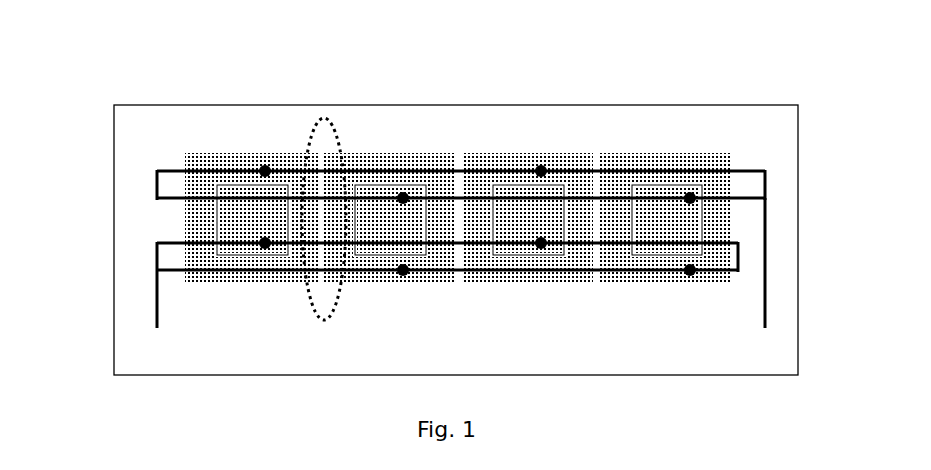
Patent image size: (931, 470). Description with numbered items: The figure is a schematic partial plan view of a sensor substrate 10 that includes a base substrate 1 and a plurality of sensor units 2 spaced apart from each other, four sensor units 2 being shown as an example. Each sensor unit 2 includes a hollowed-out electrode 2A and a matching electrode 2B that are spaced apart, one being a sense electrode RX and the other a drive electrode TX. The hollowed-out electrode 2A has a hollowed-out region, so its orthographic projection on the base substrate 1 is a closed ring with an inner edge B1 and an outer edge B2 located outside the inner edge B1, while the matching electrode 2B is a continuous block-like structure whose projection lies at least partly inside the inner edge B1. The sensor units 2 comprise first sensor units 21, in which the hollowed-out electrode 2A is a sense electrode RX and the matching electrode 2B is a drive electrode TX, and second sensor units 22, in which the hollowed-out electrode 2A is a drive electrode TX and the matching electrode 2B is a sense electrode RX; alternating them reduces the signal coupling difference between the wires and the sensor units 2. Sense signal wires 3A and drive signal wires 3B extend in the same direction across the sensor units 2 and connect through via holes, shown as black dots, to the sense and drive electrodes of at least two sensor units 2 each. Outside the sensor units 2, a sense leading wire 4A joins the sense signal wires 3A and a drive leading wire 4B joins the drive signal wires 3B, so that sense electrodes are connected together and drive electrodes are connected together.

The sensor substrate 10 is at (88, 25).
The base substrate 1 is at (798, 133).
The sensor unit 2 is at (457, 145).
The first sensor unit 21 is at (223, 138).
The second sensor unit 22 is at (431, 138).
The hollowed-out electrode 2A is at (187, 157).
The matching electrode 2B is at (185, 232).
The sense signal wire 3A is at (743, 168).
The drive signal wire 3B is at (173, 243).
The sense leading wire 4A is at (765, 324).
The drive leading wire 4B is at (157, 305).
The inner edge B1 is at (228, 255).
The outer edge B2 is at (248, 285).